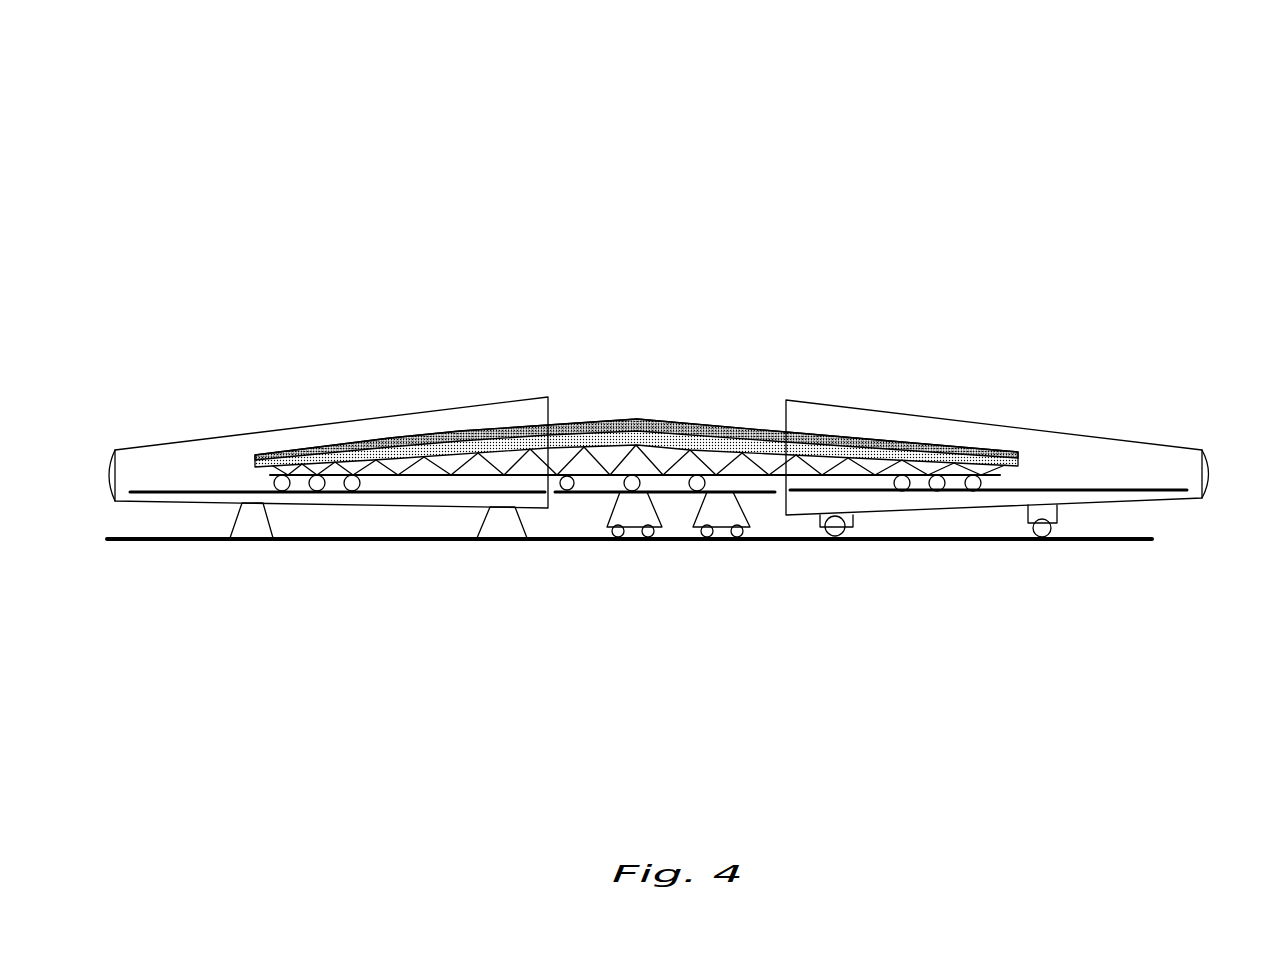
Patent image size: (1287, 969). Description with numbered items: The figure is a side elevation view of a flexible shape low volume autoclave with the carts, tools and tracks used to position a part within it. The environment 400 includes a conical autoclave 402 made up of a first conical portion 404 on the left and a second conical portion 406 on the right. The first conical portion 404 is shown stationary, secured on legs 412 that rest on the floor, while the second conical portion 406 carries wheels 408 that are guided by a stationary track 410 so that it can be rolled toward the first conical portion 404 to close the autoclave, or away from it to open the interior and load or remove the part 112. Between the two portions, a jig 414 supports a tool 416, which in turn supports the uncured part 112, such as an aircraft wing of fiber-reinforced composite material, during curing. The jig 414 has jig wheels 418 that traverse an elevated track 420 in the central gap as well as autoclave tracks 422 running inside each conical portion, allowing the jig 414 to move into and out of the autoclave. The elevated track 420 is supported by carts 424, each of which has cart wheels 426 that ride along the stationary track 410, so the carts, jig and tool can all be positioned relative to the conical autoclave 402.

The environment 400 is at (193, 107).
The conical autoclave 402 is at (997, 461).
The first conical portion 404 is at (267, 435).
The second conical portion 406 is at (1073, 435).
The wheels 408 is at (1042, 534).
The stationary track 410 is at (1138, 541).
The legs 412 is at (234, 513).
The jig 414 is at (700, 465).
The tool 416 is at (624, 421).
The part 112 is at (636, 367).
The jig wheels 418 is at (565, 490).
The elevated track 420 is at (588, 492).
The autoclave tracks 422 is at (153, 490).
The carts 424 is at (660, 523).
The cart wheels 426 is at (648, 531).